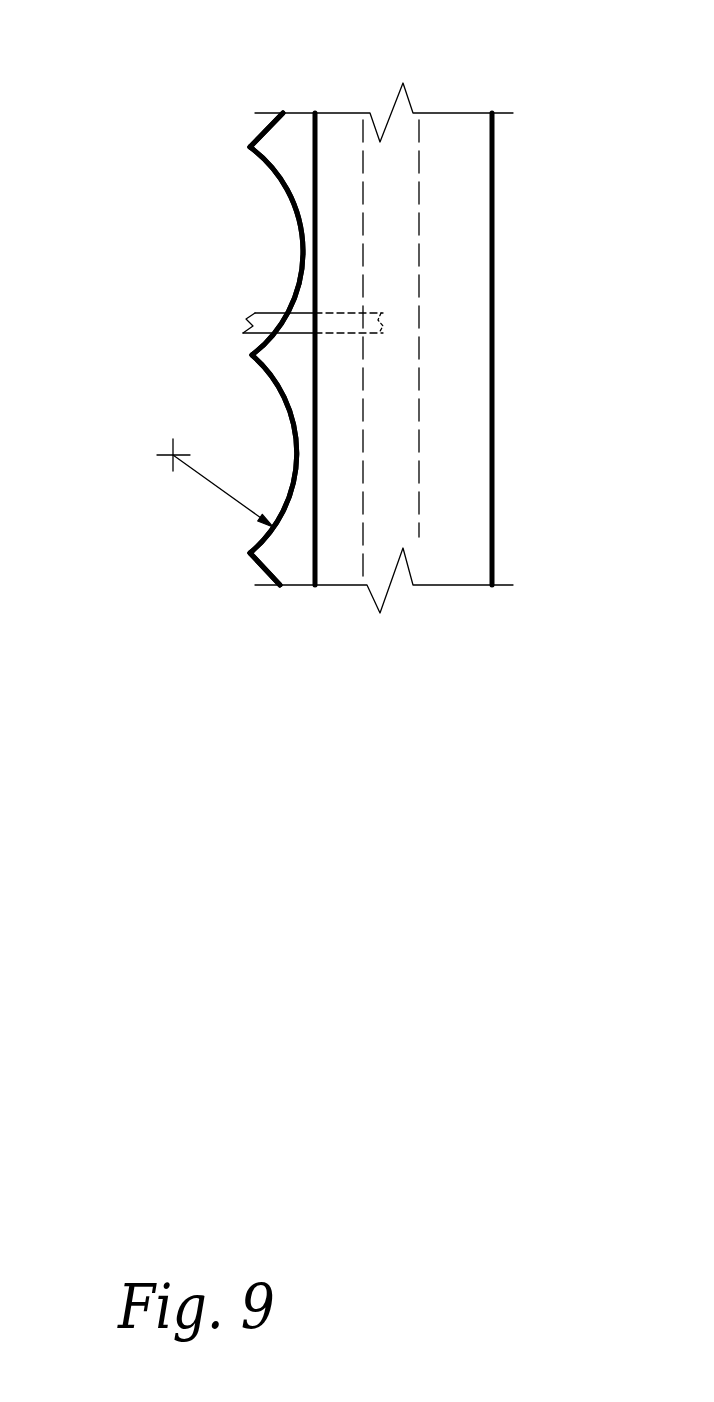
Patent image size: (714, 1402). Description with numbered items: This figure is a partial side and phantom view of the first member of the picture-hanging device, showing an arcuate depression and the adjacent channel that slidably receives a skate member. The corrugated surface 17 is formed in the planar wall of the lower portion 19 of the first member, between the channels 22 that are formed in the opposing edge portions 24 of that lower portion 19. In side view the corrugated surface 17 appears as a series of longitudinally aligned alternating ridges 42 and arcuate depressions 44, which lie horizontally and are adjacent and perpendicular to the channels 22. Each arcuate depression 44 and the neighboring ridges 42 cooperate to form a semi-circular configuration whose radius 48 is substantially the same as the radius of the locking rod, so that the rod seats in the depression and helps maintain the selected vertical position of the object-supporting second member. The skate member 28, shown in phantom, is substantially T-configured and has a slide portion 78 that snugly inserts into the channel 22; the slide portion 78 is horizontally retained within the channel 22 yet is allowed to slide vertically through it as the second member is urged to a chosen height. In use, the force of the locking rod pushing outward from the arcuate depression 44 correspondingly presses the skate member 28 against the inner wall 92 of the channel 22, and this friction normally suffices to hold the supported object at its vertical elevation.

The corrugated surface 17 is at (196, 404).
The lower portion 19 is at (492, 445).
The channel 22 is at (390, 277).
The edge portion 24 is at (460, 560).
The skate member 28 is at (268, 315).
The ridge 42 is at (248, 147).
The arcuate depression 44 is at (302, 248).
The radius 48 is at (222, 492).
The slide portion 78 is at (383, 333).
The inner wall 92 is at (363, 173).